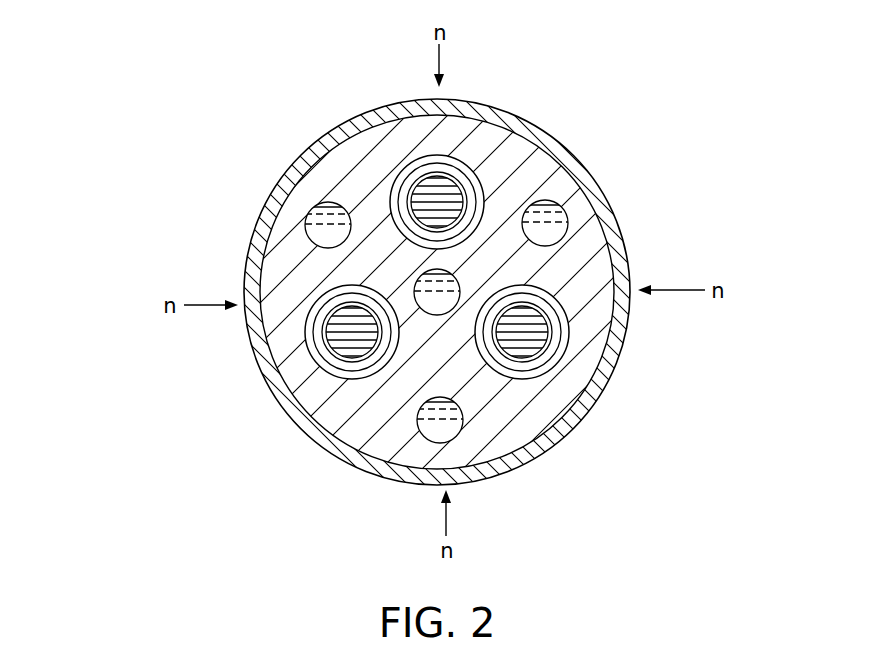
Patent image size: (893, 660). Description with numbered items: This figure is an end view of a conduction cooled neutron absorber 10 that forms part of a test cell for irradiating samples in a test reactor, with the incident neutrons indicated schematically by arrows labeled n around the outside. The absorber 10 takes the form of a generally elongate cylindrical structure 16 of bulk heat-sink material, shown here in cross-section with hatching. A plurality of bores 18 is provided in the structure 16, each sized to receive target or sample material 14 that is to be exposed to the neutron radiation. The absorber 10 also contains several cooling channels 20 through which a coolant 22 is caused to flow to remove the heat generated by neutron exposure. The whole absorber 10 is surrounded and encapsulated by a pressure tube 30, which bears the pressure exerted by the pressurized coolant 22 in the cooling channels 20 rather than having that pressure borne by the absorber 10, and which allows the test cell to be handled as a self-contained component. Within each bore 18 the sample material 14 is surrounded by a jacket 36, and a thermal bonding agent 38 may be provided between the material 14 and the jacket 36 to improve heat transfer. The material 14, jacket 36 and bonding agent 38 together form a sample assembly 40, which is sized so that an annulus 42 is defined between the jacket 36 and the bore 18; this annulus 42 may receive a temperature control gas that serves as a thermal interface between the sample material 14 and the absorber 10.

The conduction cooled neutron absorber 10 is at (138, 68).
The target or sample material 14 is at (684, 369).
The cylindrical structure 16 is at (298, 280).
The bores 18 is at (312, 346).
The cooling channels 20 is at (432, 314).
The coolant 22 is at (567, 217).
The pressure tube 30 is at (338, 130).
The jacket 36 is at (480, 178).
The thermal bonding agent 38 is at (523, 338).
The sample assembly 40 is at (536, 149).
The annulus 42 is at (466, 148).